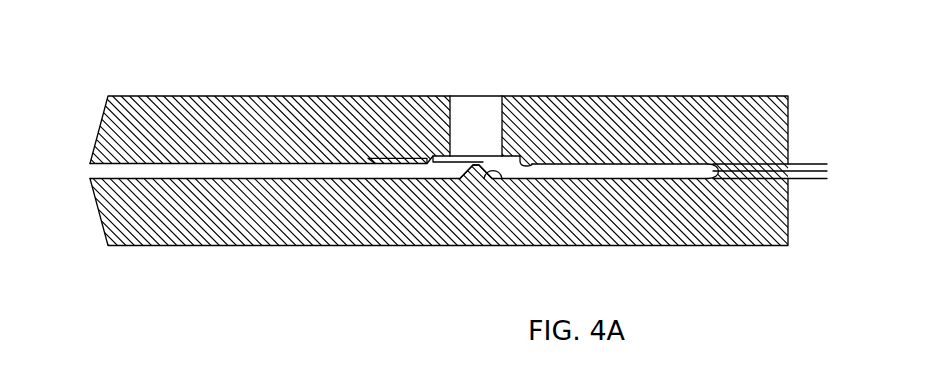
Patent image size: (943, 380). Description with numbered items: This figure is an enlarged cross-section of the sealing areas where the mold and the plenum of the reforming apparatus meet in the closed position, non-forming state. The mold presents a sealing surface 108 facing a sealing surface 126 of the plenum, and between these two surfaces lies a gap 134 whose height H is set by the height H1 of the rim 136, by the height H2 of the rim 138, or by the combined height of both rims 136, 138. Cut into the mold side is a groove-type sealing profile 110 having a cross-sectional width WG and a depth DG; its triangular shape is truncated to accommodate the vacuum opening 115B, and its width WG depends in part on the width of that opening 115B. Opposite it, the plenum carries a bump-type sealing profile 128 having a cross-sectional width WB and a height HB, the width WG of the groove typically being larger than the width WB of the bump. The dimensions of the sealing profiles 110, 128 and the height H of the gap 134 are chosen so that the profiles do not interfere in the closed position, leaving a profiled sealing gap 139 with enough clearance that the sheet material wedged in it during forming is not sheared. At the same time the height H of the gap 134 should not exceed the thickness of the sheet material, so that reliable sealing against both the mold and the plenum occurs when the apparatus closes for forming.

The sealing surface 108 is at (94, 160).
The sealing surface 126 is at (137, 177).
The groove-type sealing profile 110 is at (530, 158).
The vacuum opening 115B is at (480, 156).
The profiled sealing gap 139 is at (492, 157).
The gap 134 is at (643, 162).
The rim 136 is at (708, 160).
The rim 138 is at (713, 182).
The bump-type sealing profile 128 is at (494, 182).
The height of bump-type sealing profile HB is at (444, 167).
The width of bump-type sealing profile WB is at (459, 246).
The width of groove-type sealing profile WG is at (519, 40).
The depth of groove-type sealing profile DG is at (360, 155).
The height of gap H is at (576, 172).
The height of rim H1 is at (801, 167).
The height of rim H2 is at (801, 172).